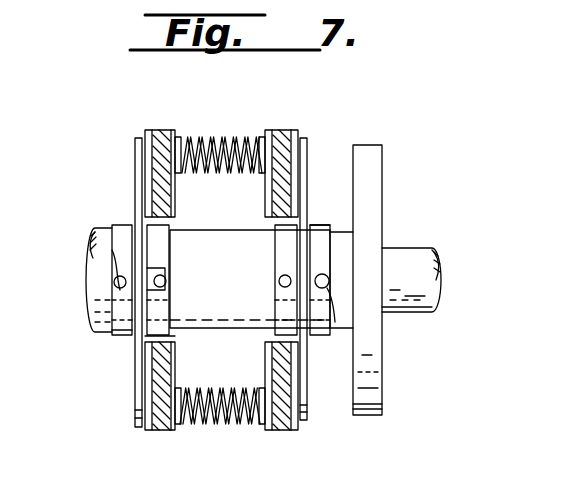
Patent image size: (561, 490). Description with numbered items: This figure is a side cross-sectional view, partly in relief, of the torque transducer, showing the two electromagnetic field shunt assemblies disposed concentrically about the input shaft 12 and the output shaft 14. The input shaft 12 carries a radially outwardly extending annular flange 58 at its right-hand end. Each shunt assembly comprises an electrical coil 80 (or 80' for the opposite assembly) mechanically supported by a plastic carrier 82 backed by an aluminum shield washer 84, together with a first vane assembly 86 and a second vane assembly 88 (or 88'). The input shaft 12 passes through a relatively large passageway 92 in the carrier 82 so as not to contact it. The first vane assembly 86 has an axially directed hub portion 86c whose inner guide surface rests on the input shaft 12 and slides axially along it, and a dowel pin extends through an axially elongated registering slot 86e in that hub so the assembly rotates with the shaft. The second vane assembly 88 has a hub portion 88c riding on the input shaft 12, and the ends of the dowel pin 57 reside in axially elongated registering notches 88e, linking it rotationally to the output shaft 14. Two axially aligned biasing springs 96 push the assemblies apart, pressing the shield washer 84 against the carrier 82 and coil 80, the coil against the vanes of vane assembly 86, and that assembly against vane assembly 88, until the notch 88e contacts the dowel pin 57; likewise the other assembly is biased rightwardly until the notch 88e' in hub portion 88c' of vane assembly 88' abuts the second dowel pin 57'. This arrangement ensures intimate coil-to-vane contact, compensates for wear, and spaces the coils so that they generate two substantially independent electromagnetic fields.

The input shaft 12 is at (105, 230).
The output shaft 14 is at (403, 248).
The pin 57 is at (74, 291).
The pin 57' is at (346, 280).
The annular flange 58 is at (384, 371).
The electrical coil 80 is at (134, 410).
The electrical coil 80' is at (292, 411).
The plastic carrier 82 is at (162, 432).
The aluminum shield washer 84 is at (180, 428).
The first vane assembly 86 is at (137, 432).
The hub portion 86c is at (165, 305).
The axially elongated registering slot 86e is at (160, 268).
The second vane assembly 88 is at (109, 282).
The second vane assembly 88' is at (335, 297).
The hub portion 88c is at (87, 350).
The hub portion 88c' is at (372, 196).
The axially elongated registering notches 88e is at (67, 263).
The notch 88e' is at (382, 313).
The passageway 92 is at (165, 196).
The biasing springs 96 is at (196, 138).